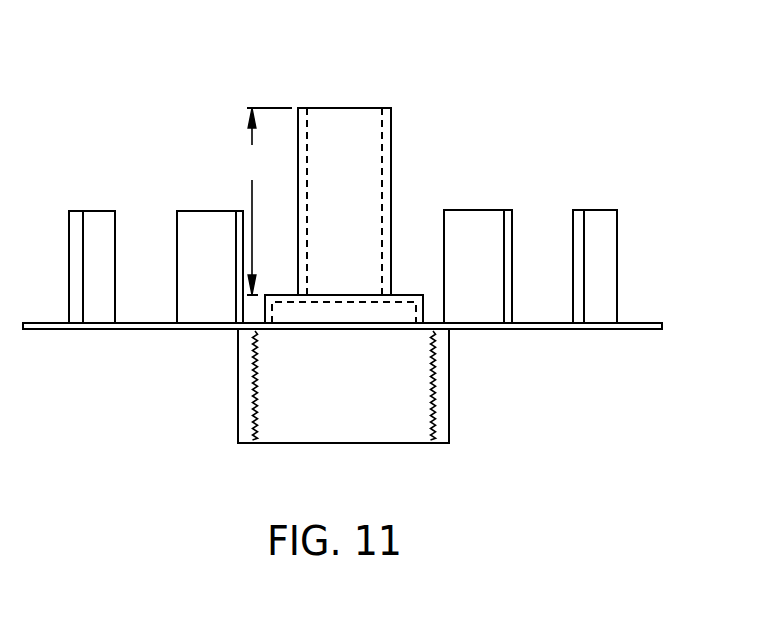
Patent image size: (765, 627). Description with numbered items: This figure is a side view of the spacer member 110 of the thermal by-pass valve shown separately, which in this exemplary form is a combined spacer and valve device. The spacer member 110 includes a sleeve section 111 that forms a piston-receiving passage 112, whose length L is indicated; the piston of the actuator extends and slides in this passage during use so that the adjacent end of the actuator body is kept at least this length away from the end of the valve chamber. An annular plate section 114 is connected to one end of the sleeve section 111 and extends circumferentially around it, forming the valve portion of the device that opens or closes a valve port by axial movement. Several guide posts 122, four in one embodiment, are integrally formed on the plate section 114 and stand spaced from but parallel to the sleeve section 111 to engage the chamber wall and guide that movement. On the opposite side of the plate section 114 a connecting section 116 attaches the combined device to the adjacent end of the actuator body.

The spacer member 110 is at (402, 80).
The sleeve section 111 is at (392, 193).
The piston-receiving passage 112 is at (342, 135).
The annular plate section 114 is at (507, 332).
The connecting section 116 is at (440, 405).
The guide posts 122 is at (202, 211).